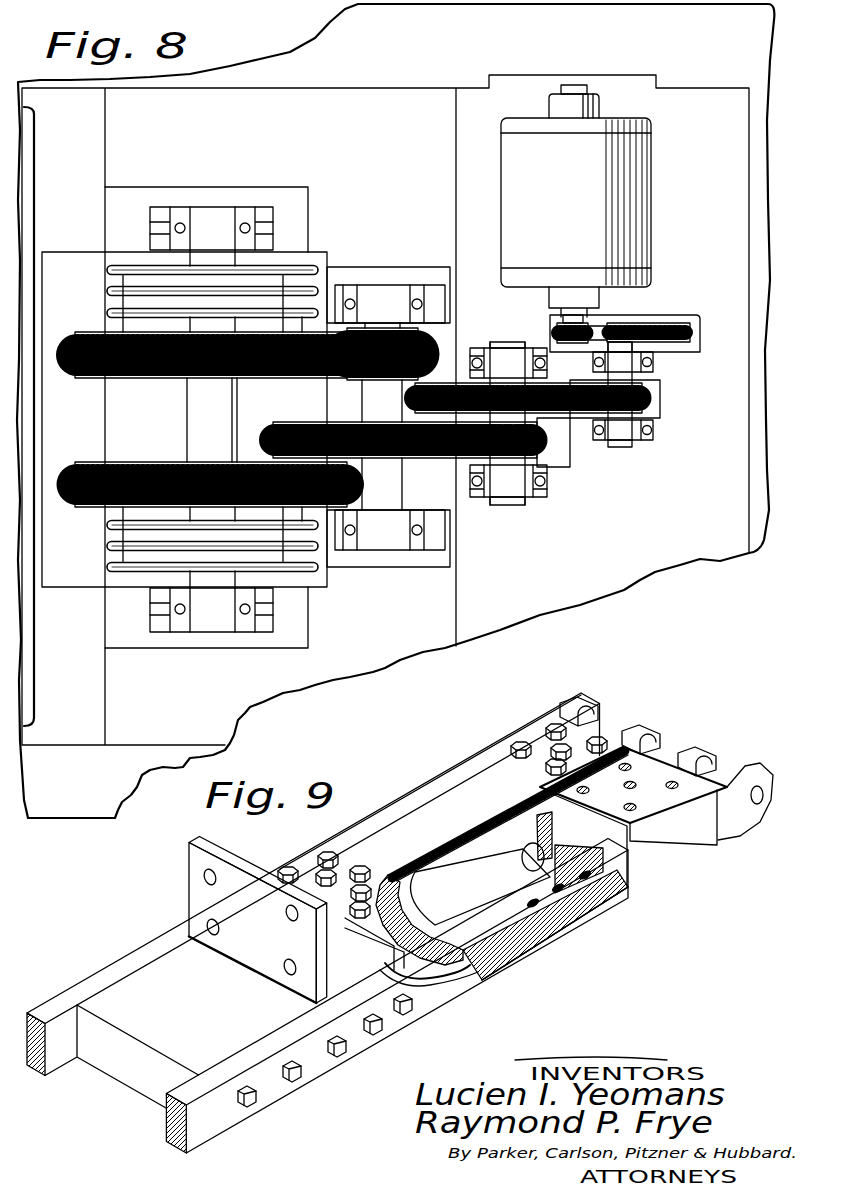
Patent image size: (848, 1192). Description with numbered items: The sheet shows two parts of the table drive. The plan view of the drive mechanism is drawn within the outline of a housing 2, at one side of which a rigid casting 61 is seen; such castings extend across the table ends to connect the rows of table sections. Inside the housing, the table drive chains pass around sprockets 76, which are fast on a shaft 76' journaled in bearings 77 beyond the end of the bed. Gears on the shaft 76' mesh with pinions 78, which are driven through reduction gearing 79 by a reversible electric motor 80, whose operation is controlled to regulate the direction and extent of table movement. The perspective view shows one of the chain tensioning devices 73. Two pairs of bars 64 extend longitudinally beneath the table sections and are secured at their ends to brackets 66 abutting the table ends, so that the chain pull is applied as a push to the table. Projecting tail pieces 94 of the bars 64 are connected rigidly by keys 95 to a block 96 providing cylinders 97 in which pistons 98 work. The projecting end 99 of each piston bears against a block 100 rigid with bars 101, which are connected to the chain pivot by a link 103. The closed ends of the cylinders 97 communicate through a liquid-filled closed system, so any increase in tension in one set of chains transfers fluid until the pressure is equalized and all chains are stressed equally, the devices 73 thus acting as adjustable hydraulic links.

In FIG. 8, the machine frame/housing 2 is at (707, 557).
In FIG. 8, the rigid castings 61 is at (35, 178).
In FIG. 8, the sprockets 76 is at (194, 419).
In FIG. 8, the shaft 76' is at (306, 419).
In FIG. 8, the bearings 77 is at (216, 628).
In FIG. 8, the pinions 78 is at (413, 352).
In FIG. 8, the reduction gearing 79 is at (487, 338).
In FIG. 8, the reversible electric motor 80 is at (653, 224).
In FIG. 9, the bars 64 is at (53, 1053).
In FIG. 9, the brackets 66 is at (190, 877).
In FIG. 9, the adjusting devices 73 is at (608, 937).
In FIG. 9, the tail pieces 94 is at (607, 897).
In FIG. 9, the keys 95 is at (570, 907).
In FIG. 9, the nut 96 is at (582, 860).
In FIG. 9, the cylinders 97 is at (540, 842).
In FIG. 9, the pistons 98 is at (492, 883).
In FIG. 9, the projecting end 99 is at (428, 906).
In FIG. 9, the block 100 is at (431, 976).
In FIG. 9, the bars 101 is at (467, 777).
In FIG. 9, the link 103 is at (676, 748).